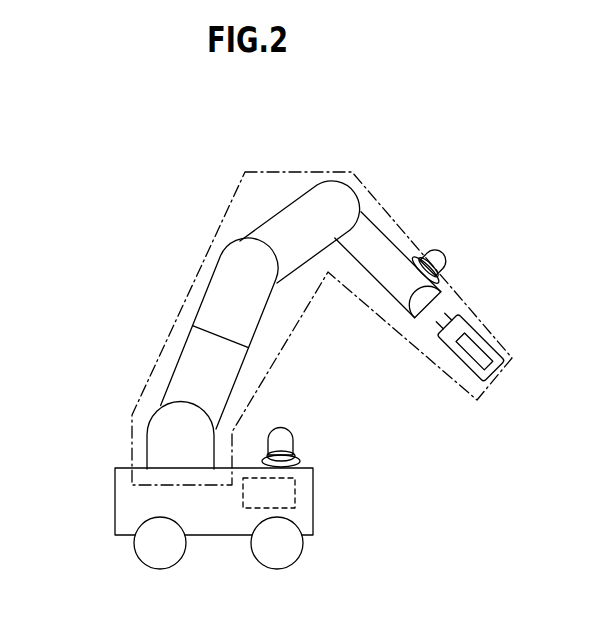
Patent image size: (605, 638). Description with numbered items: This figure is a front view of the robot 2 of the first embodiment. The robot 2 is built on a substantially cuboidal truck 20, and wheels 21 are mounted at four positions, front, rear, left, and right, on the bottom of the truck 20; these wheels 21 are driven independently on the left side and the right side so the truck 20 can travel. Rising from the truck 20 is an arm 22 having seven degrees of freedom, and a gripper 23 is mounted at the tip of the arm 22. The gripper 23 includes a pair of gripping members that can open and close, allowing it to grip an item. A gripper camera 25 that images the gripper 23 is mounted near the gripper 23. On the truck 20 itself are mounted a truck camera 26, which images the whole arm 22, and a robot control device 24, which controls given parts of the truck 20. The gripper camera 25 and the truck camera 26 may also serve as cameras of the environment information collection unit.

The robot 2 is at (277, 153).
The truck 20 is at (114, 492).
The wheels 21 is at (260, 563).
The arm 22 is at (187, 292).
The gripper 23 is at (443, 363).
The robot control device 24 is at (295, 490).
The gripper camera 25 is at (437, 253).
The truck camera 26 is at (293, 447).